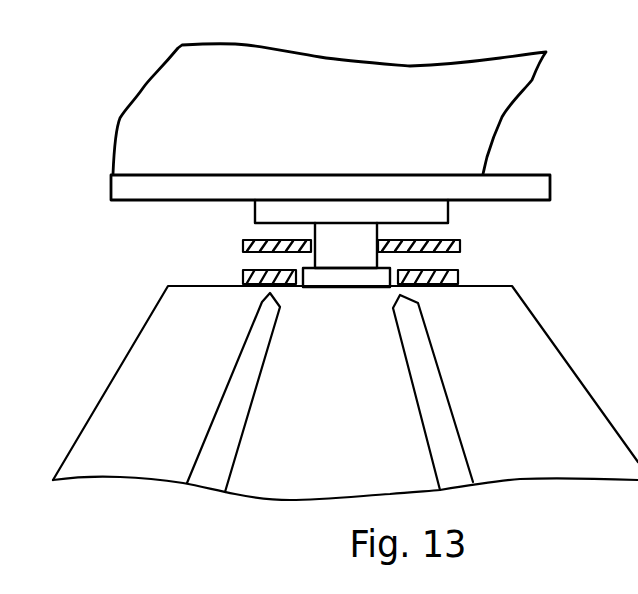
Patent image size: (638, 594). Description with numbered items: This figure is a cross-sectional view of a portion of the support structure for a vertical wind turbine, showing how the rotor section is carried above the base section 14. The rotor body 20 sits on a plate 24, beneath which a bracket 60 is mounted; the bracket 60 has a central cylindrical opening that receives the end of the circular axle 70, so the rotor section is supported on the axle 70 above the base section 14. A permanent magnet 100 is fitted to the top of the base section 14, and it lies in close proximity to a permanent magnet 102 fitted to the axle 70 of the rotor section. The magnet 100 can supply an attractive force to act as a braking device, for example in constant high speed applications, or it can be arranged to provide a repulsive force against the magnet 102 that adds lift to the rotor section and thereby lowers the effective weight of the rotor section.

The base section 14 is at (118, 387).
The upper body 20 is at (152, 127).
The plate 24 is at (111, 195).
The bracket 60 is at (255, 214).
The circular axle 70 is at (328, 255).
The permanent magnet 100 is at (256, 283).
The permanent magnet 102 is at (243, 250).